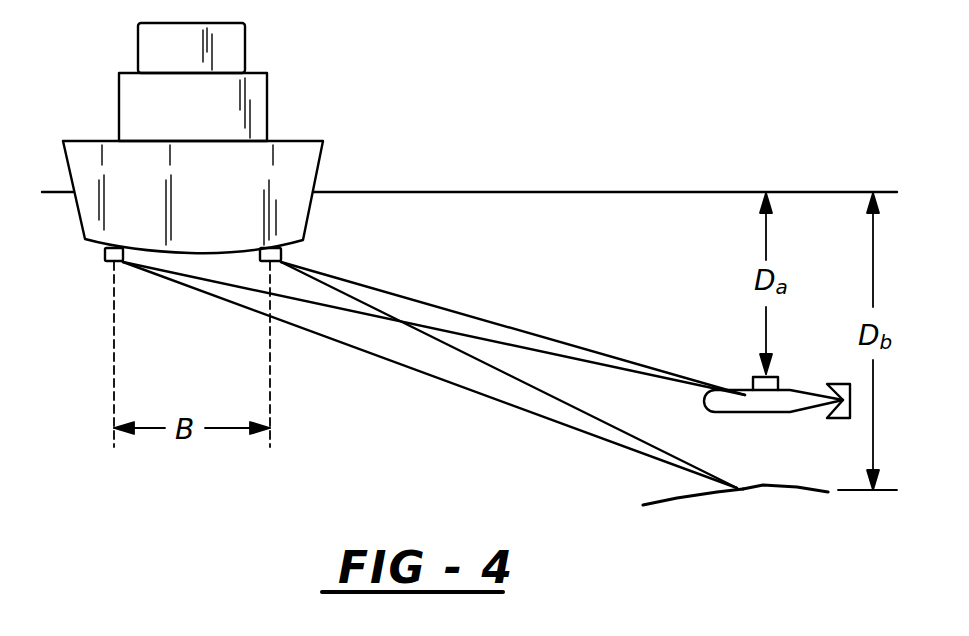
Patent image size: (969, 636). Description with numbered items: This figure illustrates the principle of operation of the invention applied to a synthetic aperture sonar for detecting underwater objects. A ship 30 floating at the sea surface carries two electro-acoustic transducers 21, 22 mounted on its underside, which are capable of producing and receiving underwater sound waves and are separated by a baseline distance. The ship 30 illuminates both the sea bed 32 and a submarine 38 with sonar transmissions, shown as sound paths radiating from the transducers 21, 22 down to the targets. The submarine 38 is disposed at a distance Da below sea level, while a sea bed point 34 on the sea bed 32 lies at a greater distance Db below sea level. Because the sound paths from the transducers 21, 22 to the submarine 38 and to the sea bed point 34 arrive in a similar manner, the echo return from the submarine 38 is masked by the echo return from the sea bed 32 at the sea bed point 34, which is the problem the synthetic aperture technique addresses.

The ship 30 is at (245, 52).
The transducer 21 is at (103, 253).
The transducer 22 is at (281, 256).
The submarine 38 is at (801, 392).
The sea bed 32 is at (772, 484).
The sea bed point 34 is at (748, 495).